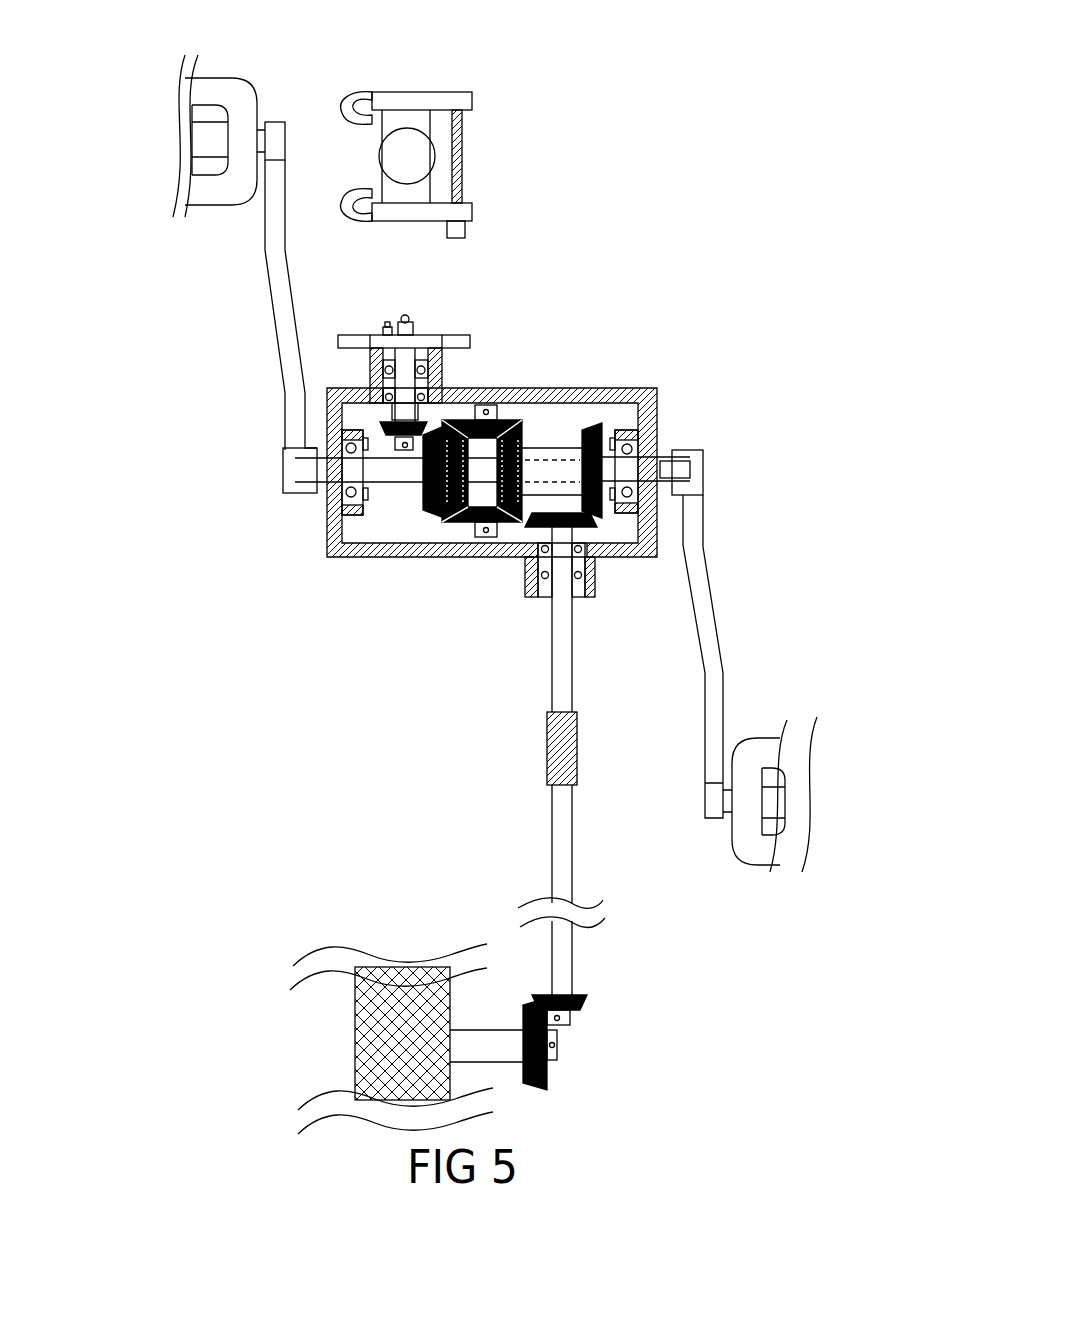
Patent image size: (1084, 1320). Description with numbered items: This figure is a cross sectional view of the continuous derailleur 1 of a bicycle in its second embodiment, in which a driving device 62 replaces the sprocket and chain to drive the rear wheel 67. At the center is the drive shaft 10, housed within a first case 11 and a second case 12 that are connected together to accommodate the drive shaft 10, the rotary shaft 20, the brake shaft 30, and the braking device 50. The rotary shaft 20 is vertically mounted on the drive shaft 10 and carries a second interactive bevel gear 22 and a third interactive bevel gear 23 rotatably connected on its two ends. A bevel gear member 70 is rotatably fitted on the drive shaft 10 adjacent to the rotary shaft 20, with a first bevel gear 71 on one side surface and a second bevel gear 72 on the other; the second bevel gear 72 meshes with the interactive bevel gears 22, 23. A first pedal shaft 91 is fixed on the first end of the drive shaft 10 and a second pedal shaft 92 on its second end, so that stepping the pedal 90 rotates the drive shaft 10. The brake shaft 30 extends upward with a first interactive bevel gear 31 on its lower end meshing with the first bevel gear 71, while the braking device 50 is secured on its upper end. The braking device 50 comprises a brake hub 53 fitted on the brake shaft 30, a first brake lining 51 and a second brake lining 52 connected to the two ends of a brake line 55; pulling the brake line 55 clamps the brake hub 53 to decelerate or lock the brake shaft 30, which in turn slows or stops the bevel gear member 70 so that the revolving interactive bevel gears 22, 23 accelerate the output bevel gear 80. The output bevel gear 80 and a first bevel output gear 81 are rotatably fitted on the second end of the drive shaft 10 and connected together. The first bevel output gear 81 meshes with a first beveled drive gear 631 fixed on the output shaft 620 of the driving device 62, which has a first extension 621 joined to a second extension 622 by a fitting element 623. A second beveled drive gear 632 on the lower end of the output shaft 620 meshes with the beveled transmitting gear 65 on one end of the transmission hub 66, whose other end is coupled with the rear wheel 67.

The continuous derailleur 1 is at (375, 597).
The drive shaft 10 is at (545, 465).
The first case 11 is at (435, 375).
The second case 12 is at (627, 390).
The rotary shaft 20 is at (485, 497).
The second interactive bevel gear 22 is at (497, 522).
The third interactive bevel gear 23 is at (498, 427).
The brake shaft 30 is at (402, 372).
The first interactive bevel gear 31 is at (350, 413).
The braking device 50 is at (423, 222).
The first brake lining 51 is at (395, 193).
The second brake lining 52 is at (408, 122).
The brake hub 53 is at (378, 157).
The brake line 55 is at (462, 162).
The driving device 62 is at (602, 1013).
The output shaft 620 is at (516, 761).
The first extension 621 is at (558, 640).
The second extension 622 is at (558, 850).
The fitting element 623 is at (560, 742).
The first beveled drive gear 631 is at (580, 525).
The second beveled drive gear 632 is at (543, 997).
The beveled transmitting gear 65 is at (547, 1073).
The transmission hub 66 is at (500, 1045).
The rear wheel 67 is at (373, 1008).
The bevel gear member 70 is at (424, 548).
The first bevel gear 71 is at (430, 513).
The second bevel gear 72 is at (448, 520).
The output bevel gear 80 is at (525, 433).
The first bevel output gear 81 is at (587, 412).
The pedal 90 is at (230, 183).
The first pedal shaft 91 is at (280, 302).
The second pedal shaft 92 is at (712, 688).